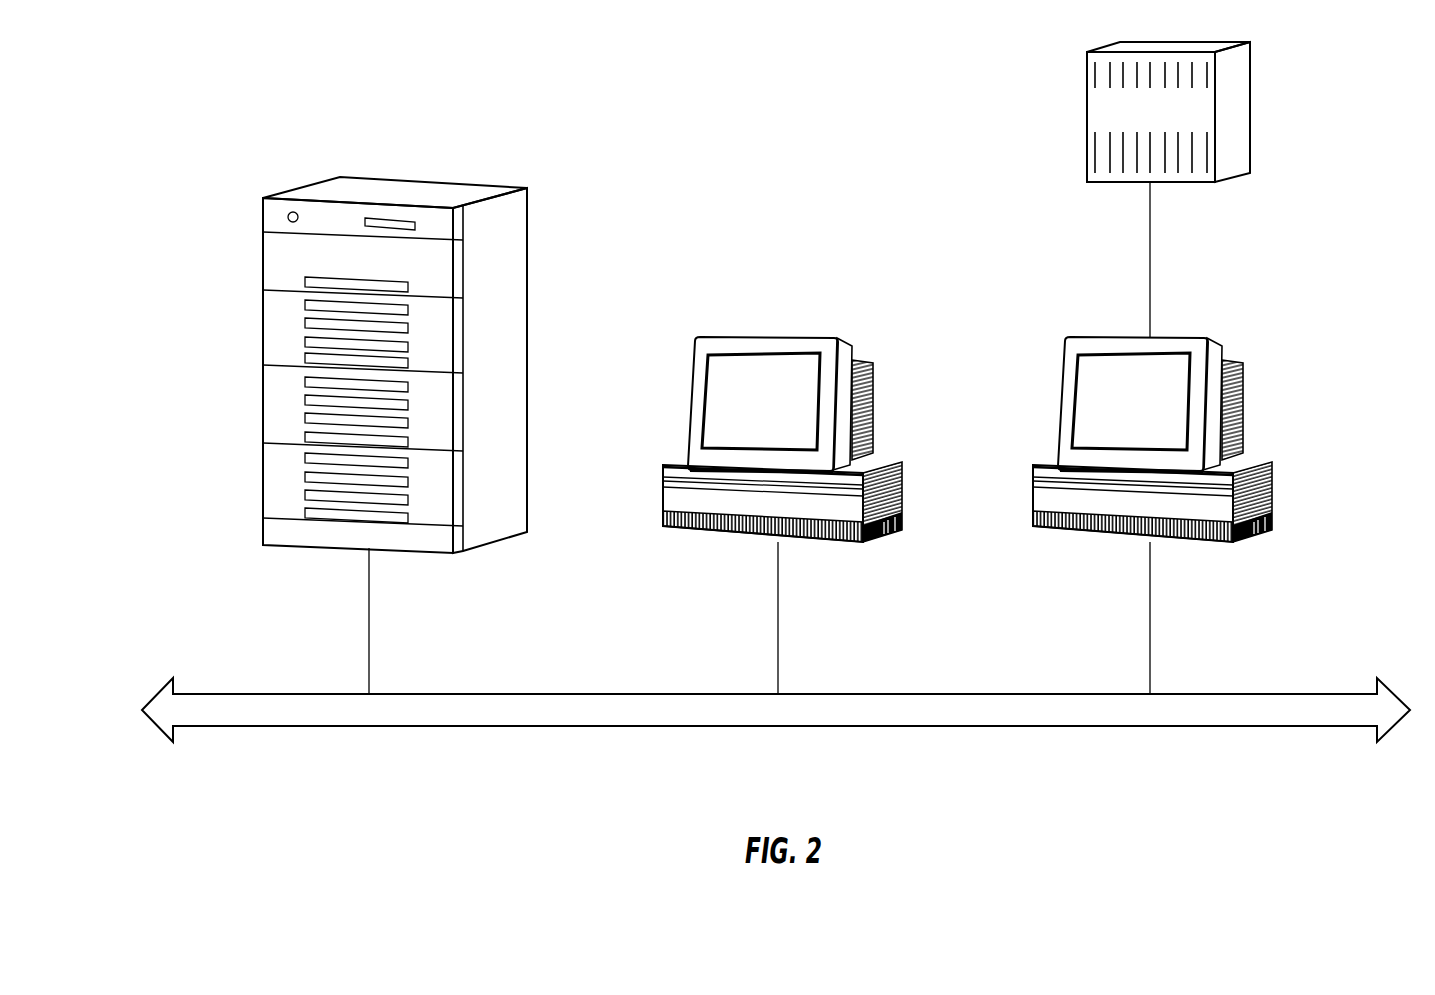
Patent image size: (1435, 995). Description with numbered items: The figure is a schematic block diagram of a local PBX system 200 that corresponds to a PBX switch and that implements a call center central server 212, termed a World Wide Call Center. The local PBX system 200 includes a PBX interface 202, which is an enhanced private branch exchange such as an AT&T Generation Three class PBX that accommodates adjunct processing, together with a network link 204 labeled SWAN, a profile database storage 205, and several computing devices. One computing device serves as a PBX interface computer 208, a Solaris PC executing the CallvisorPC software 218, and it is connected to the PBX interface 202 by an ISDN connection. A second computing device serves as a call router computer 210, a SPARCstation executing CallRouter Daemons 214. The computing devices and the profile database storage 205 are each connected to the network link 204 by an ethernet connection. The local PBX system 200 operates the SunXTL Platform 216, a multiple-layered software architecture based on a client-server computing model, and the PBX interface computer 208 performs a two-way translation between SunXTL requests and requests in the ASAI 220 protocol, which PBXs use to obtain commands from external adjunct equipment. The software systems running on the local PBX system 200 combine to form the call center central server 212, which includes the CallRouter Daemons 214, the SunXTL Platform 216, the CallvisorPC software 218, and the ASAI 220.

The local PBX system 200 is at (188, 106).
The PBX interface 202 is at (1202, 91).
The network link 204 is at (776, 727).
The profile database storage 205 is at (426, 410).
The PBX interface computer 208 is at (1280, 544).
The call router computer 210 is at (910, 544).
The call center central server 212 is at (1284, 316).
The CallRouter Daemons 214 is at (926, 316).
The SunXTL Platform 216 is at (793, 182).
The CallvisorPC software 218 is at (1380, 437).
The ASAI 220 is at (1283, 242).